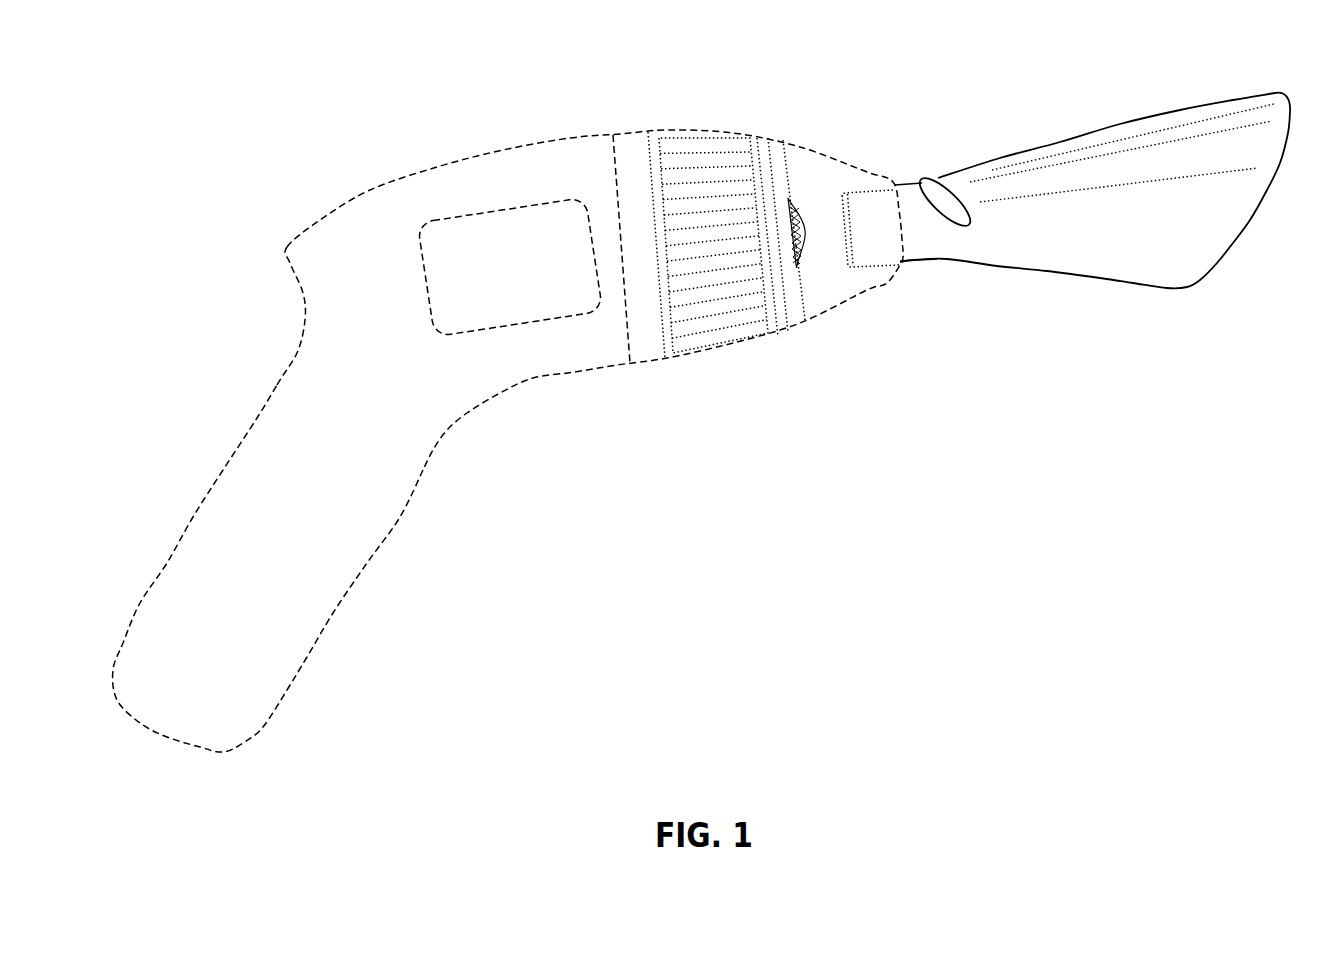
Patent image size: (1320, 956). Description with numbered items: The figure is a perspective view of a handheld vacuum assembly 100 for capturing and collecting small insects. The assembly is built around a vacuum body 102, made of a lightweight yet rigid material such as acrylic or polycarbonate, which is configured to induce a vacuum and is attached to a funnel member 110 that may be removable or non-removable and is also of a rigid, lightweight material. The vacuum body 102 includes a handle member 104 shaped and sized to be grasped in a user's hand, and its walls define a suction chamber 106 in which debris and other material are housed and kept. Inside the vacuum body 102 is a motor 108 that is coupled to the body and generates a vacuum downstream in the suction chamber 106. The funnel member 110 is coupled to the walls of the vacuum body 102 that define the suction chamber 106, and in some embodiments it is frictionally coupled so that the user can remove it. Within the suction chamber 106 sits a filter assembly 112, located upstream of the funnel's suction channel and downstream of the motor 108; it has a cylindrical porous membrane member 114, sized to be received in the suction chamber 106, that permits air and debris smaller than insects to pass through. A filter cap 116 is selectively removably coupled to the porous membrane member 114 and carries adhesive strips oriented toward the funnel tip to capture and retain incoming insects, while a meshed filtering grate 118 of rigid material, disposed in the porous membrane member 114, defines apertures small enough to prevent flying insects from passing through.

The handheld vacuum assembly 100 is at (357, 158).
The vacuum body 102 is at (532, 353).
The handle member 104 is at (335, 565).
The suction chamber 106 is at (829, 157).
The motor 108 is at (538, 284).
The funnel member 110 is at (1067, 140).
The filter assembly 112 is at (745, 122).
The porous membrane member 114 is at (693, 155).
The filter cap 116 is at (780, 143).
The meshed filtering grate 118 is at (797, 247).